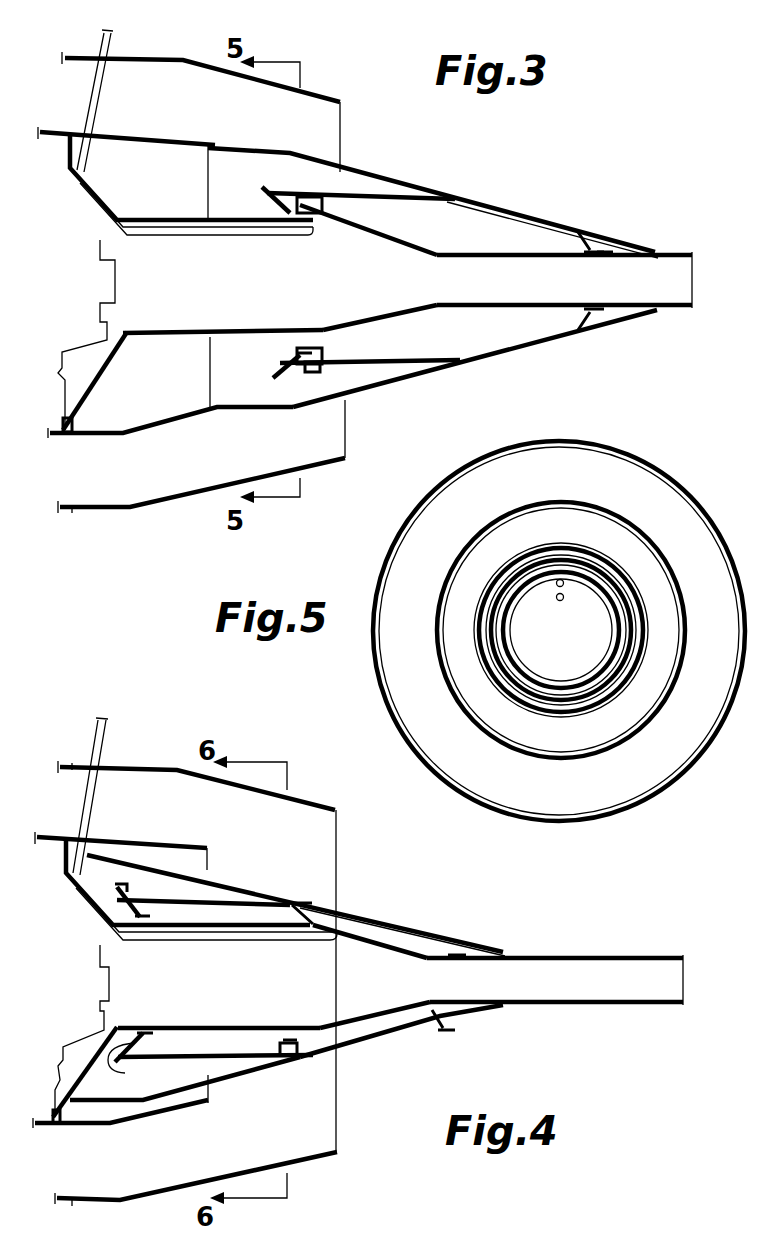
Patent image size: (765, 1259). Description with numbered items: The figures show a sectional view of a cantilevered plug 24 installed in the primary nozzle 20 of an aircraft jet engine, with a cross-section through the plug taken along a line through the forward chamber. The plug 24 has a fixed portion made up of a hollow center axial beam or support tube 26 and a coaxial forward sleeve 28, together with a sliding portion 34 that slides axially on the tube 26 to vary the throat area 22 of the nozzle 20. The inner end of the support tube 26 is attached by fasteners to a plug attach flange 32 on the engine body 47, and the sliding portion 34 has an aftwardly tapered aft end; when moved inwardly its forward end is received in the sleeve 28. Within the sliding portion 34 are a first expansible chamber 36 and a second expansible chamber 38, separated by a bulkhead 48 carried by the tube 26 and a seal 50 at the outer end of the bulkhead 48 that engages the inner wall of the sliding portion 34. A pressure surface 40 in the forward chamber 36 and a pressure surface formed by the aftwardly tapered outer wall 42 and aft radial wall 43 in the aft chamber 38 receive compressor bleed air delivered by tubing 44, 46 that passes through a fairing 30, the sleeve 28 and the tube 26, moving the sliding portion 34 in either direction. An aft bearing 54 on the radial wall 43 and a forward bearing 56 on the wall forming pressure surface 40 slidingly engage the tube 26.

In FIG. 3, the primary nozzle 20 is at (322, 88).
In FIG. 5, the primary nozzle 20 is at (697, 492).
In FIG. 4, the primary nozzle 20 is at (293, 803).
In FIG. 3, the throat area 22 is at (333, 123).
In FIG. 5, the throat area 22 is at (716, 584).
In FIG. 4, the throat area 22 is at (322, 1135).
In FIG. 3, the cantilevered plug 24 is at (378, 168).
In FIG. 4, the cantilevered plug 24 is at (375, 917).
In FIG. 3, the center axial beam 26 is at (383, 291).
In FIG. 5, the center axial beam 26 is at (556, 642).
In FIG. 4, the center axial beam 26 is at (377, 991).
In FIG. 3, the forward sleeve 28 is at (150, 131).
In FIG. 4, the forward sleeve 28 is at (145, 847).
In FIG. 3, the fairing 30 is at (141, 68).
In FIG. 4, the fairing 30 is at (75, 788).
In FIG. 3, the plug attach flange 32 is at (67, 143).
In FIG. 4, the plug attach flange 32 is at (52, 1110).
In FIG. 3, the sliding portion 34 is at (378, 372).
In FIG. 5, the sliding portion 34 is at (687, 630).
In FIG. 4, the sliding portion 34 is at (237, 1083).
In FIG. 3, the first expansible chamber 36 is at (280, 191).
In FIG. 5, the first expansible chamber 36 is at (560, 702).
In FIG. 4, the first expansible chamber 36 is at (220, 921).
In FIG. 3, the second expansible chamber 38 is at (457, 241).
In FIG. 4, the second expansible chamber 38 is at (392, 935).
In FIG. 3, the pressure surface 40 is at (273, 362).
In FIG. 4, the pressure surface 40 is at (147, 902).
In FIG. 3, the aftwardly tapered outer wall 42 is at (513, 207).
In FIG. 4, the aftwardly tapered outer wall 42 is at (383, 1033).
In FIG. 3, the aft radial wall 43 is at (577, 236).
In FIG. 4, the aft radial wall 43 is at (400, 1015).
In FIG. 3, the tubing 44 is at (183, 232).
In FIG. 5, the tubing 44 is at (563, 581).
In FIG. 4, the tubing 44 is at (172, 935).
In FIG. 3, the tubing 46 is at (240, 238).
In FIG. 5, the tubing 46 is at (565, 596).
In FIG. 4, the tubing 46 is at (240, 946).
In FIG. 3, the engine body 47 is at (97, 294).
In FIG. 4, the engine body 47 is at (80, 1001).
In FIG. 3, the bulkhead 48 is at (320, 211).
In FIG. 5, the bulkhead 48 is at (636, 650).
In FIG. 4, the bulkhead 48 is at (318, 915).
In FIG. 3, the seal 50 is at (292, 366).
In FIG. 5, the seal 50 is at (612, 690).
In FIG. 4, the seal 50 is at (293, 1048).
In FIG. 3, the aft bearing 54 is at (600, 256).
In FIG. 4, the aft bearing 54 is at (460, 957).
In FIG. 3, the forward bearing 56 is at (263, 213).
In FIG. 5, the forward bearing 56 is at (527, 688).
In FIG. 4, the forward bearing 56 is at (108, 1062).